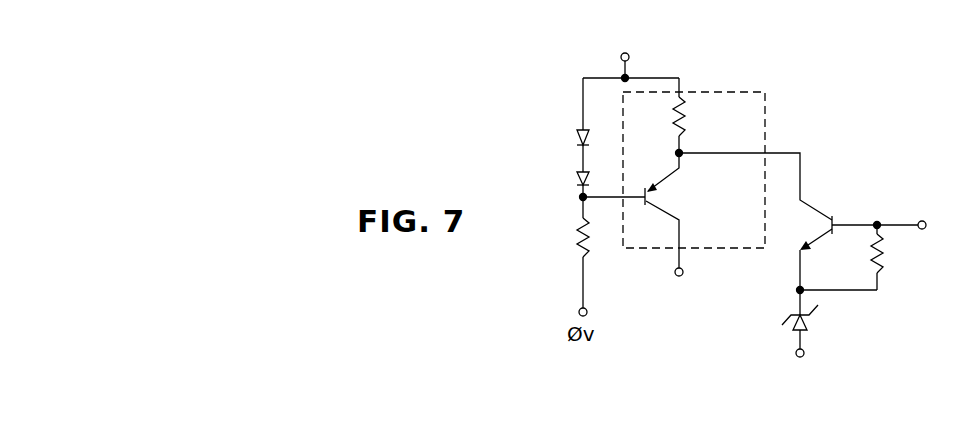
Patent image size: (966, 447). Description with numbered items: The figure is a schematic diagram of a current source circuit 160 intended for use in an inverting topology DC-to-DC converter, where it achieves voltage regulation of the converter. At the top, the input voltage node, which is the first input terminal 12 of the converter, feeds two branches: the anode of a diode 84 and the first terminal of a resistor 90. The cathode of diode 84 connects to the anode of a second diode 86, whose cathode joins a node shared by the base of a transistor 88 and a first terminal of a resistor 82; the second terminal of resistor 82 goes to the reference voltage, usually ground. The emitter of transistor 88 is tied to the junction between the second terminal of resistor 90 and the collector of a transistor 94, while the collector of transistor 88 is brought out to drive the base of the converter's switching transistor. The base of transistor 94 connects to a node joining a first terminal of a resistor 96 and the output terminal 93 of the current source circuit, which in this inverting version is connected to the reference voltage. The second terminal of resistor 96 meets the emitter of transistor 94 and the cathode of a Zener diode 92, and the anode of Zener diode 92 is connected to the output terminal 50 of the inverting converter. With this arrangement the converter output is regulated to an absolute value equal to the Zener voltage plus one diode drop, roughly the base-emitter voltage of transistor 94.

The current source circuit 160 is at (468, 149).
The first input terminal 12 is at (630, 56).
The diode 84 is at (577, 140).
The diode 86 is at (577, 182).
The resistor 82 is at (580, 248).
The transistor 88 is at (651, 198).
The resistor 90 is at (686, 118).
The transistor 94 is at (828, 222).
The output terminal 93 is at (922, 220).
The resistor 96 is at (882, 256).
The Zener diode 92 is at (807, 326).
The output terminal 50 is at (805, 355).